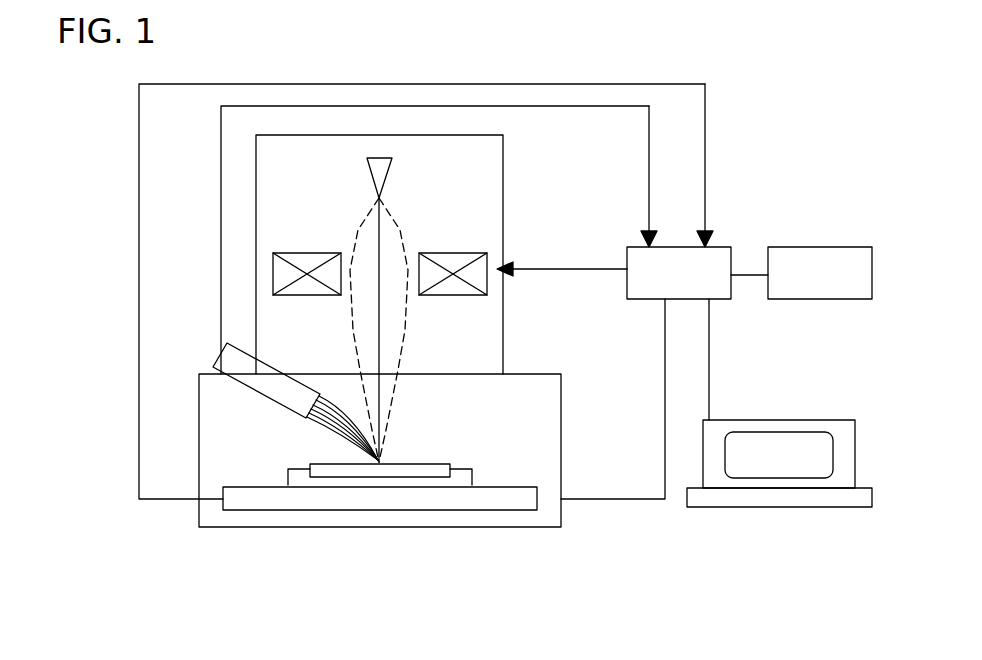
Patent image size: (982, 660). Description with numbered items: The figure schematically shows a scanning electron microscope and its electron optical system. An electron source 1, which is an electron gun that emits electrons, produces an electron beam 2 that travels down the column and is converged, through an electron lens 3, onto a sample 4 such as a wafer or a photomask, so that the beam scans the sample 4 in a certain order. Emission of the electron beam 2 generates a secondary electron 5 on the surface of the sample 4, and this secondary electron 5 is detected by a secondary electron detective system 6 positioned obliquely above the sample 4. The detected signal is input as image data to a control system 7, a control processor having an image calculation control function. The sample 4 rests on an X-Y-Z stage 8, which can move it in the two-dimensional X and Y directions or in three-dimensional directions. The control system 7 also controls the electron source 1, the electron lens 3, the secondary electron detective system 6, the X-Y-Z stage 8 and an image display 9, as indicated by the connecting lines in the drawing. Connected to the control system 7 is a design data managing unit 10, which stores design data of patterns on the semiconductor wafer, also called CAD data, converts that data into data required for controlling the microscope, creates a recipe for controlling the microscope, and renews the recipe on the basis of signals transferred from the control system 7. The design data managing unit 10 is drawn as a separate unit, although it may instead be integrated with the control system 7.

The electron source 1 is at (392, 160).
The electron beam 2 is at (413, 328).
The electron lens 3 is at (490, 298).
The sample 4 is at (383, 472).
The secondary electron 5 is at (343, 425).
The secondary electron detective system 6 is at (225, 346).
The control system 7 is at (697, 273).
The X-Y-Z stage 8 is at (445, 502).
The image display 9 is at (733, 510).
The design data managing unit 10 is at (820, 273).